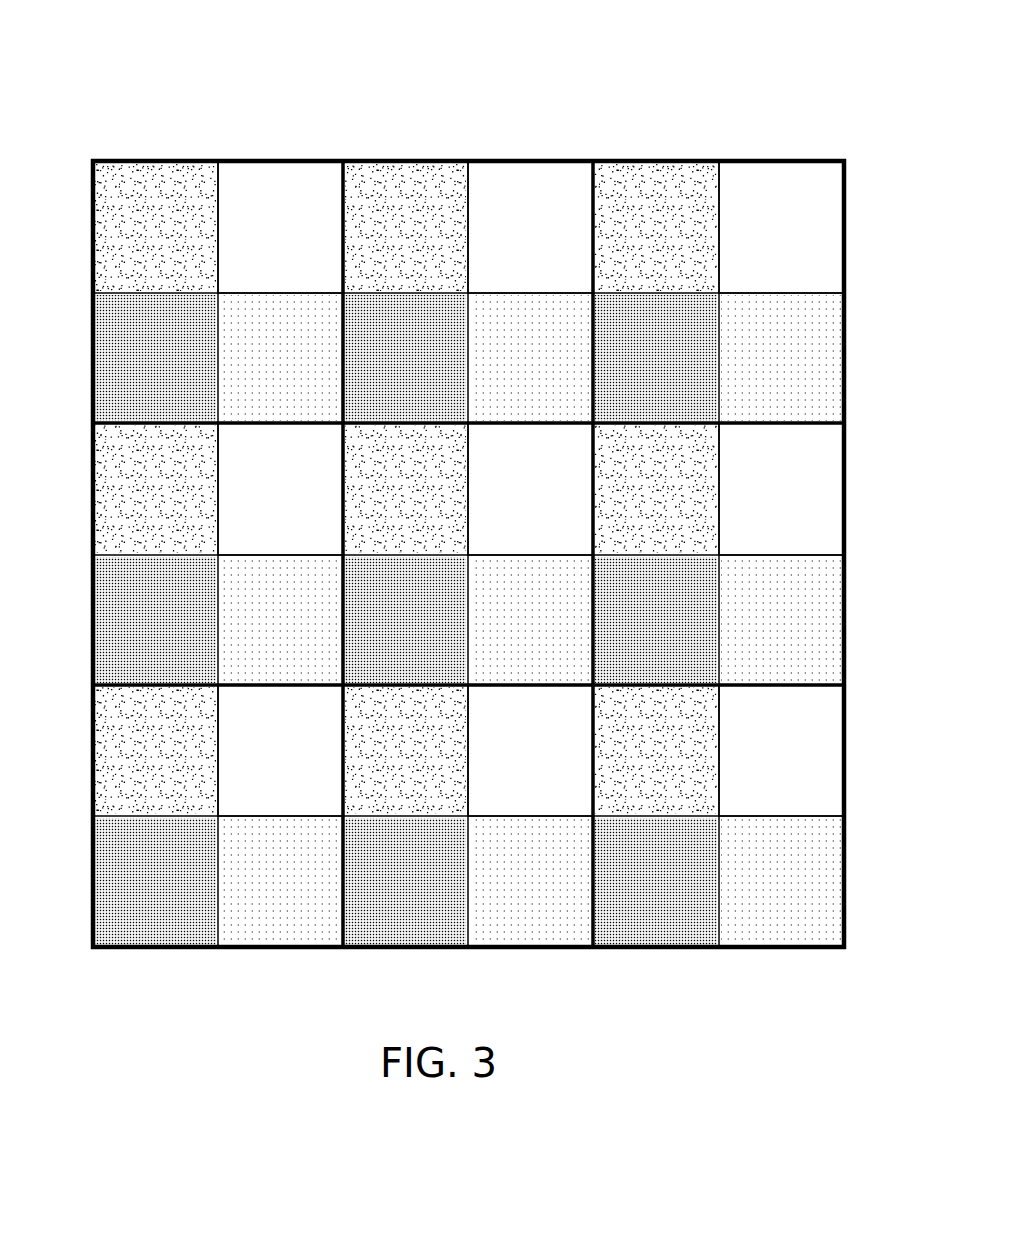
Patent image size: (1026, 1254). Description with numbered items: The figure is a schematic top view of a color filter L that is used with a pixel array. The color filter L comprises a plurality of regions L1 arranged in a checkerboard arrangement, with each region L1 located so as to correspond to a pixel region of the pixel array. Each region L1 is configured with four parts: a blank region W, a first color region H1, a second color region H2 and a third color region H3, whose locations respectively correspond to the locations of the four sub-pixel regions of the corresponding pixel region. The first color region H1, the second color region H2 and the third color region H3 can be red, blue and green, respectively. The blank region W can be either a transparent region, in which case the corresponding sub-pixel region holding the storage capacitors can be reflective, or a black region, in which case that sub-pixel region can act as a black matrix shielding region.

The first color region H1 is at (128, 177).
The second color region H2 is at (293, 345).
The third color region H3 is at (179, 333).
The blank region W is at (257, 177).
The region L1 is at (74, 298).
The color filter L is at (860, 130).